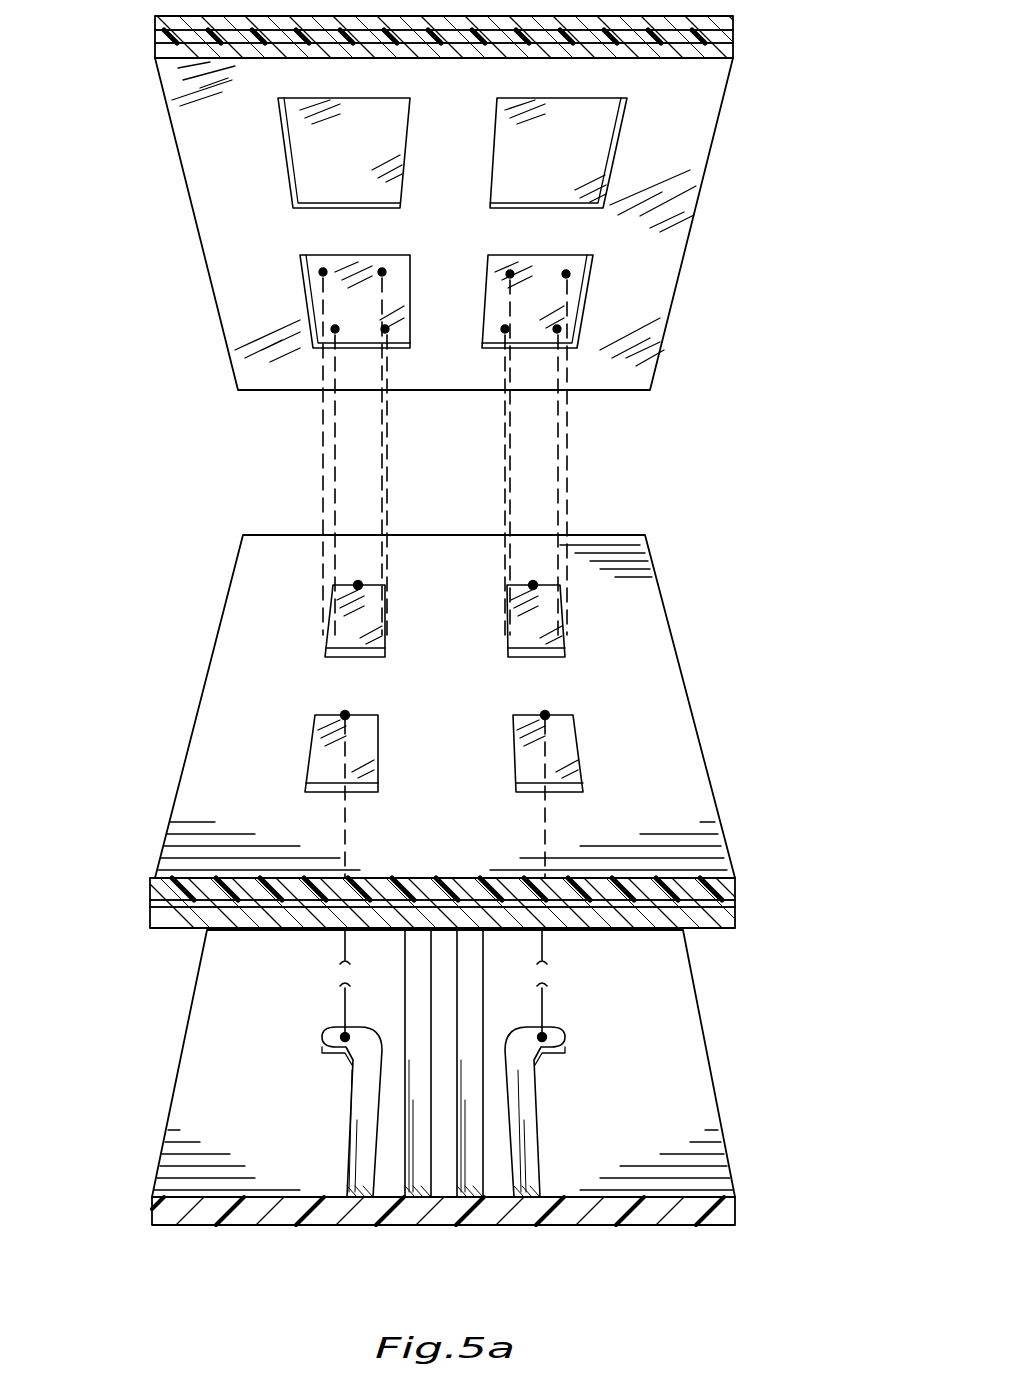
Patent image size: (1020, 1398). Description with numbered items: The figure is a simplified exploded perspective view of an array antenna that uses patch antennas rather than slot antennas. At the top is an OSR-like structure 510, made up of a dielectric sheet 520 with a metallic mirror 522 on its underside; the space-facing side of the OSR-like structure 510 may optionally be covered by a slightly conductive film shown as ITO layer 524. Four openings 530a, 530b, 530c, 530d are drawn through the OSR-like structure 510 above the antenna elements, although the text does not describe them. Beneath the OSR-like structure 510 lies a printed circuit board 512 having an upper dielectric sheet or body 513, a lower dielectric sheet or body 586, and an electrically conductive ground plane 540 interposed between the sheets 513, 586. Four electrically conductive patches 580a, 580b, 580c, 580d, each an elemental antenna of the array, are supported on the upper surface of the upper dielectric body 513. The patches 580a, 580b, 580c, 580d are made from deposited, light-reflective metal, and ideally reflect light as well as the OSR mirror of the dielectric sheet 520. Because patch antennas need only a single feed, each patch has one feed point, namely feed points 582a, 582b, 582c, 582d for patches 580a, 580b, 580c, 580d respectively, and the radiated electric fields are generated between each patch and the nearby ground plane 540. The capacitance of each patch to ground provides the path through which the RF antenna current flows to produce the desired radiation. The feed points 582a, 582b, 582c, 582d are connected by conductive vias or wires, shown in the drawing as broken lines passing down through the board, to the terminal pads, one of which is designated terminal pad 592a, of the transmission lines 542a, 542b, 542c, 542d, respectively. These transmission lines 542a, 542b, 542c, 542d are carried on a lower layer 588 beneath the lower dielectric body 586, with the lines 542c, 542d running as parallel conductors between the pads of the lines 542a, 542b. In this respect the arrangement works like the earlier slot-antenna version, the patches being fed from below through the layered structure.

The OSR-like structure 510 is at (170, 228).
The printed circuit board 512 is at (182, 660).
The upper dielectric sheet or body 513 is at (150, 890).
The dielectric sheet 520 is at (733, 38).
The metallic mirror 522 is at (155, 50).
The ITO layer 524 is at (155, 22).
The chip opening a 530a is at (296, 138).
The chip opening b 530b is at (606, 138).
The chip opening c 530c is at (314, 292).
The chip opening d 530d is at (580, 298).
The ground plane 540 is at (735, 908).
The transmission line 542a is at (347, 1165).
The transmission line 542b is at (540, 1172).
The transmission line 542c is at (405, 973).
The transmission line 542d is at (483, 978).
The electrically conductive patch 580a is at (372, 752).
The electrically conductive patch 580b is at (580, 752).
The electrically conductive patch 580c is at (386, 630).
The electrically conductive patch 580d is at (566, 630).
The feed point 582a is at (345, 715).
The feed point 582b is at (545, 715).
The feed point 582c is at (358, 585).
The feed point 582d is at (533, 585).
The lower dielectric sheet or body 586 is at (150, 918).
The bottom substrate layer 588 is at (172, 1108).
The terminal pad 592a is at (322, 1040).